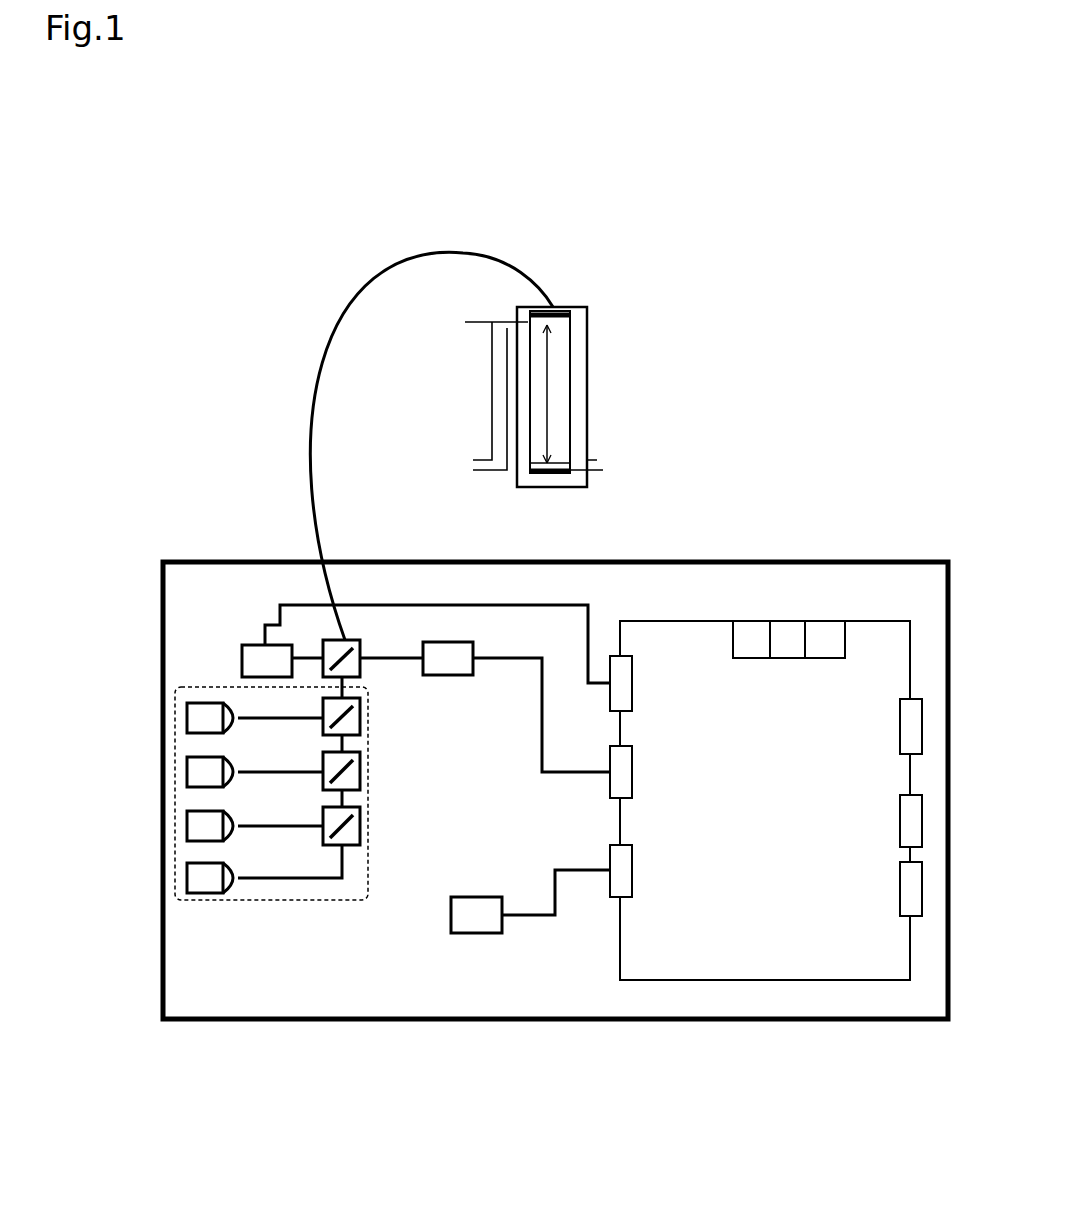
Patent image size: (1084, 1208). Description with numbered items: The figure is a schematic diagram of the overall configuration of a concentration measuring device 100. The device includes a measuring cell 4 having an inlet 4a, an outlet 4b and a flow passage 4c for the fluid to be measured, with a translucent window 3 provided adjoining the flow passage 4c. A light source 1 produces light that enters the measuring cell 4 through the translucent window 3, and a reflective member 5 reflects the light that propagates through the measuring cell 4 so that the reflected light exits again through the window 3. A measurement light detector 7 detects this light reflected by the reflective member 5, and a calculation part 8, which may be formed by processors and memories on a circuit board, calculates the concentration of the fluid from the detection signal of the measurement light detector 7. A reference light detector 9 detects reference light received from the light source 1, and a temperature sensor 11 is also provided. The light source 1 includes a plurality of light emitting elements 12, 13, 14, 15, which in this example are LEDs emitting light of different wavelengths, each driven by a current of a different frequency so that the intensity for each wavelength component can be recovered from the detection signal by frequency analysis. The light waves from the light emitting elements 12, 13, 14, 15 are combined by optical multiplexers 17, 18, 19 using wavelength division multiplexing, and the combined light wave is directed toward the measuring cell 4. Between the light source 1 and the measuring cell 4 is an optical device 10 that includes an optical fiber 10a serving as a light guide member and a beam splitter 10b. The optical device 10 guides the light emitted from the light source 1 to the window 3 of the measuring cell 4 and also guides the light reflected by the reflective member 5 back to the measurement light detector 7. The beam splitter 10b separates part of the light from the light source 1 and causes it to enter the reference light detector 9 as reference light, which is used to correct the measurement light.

The light source 1 is at (273, 902).
The translucent window 3 is at (567, 308).
The measuring cell 4 is at (573, 357).
The inlet 4a is at (522, 393).
The outlet 4b is at (567, 462).
The flow passage 4c is at (560, 397).
The reflective member 5 is at (557, 474).
The measurement light detector 7 is at (256, 643).
The calculation part 8 is at (716, 621).
The reference light detector 9 is at (455, 676).
The optical device 10 is at (323, 387).
The optical fiber 10a is at (394, 336).
The beam splitter 10b is at (341, 658).
The temperature sensor 11 is at (472, 933).
The light emitting element 12 is at (185, 717).
The light emitting element 13 is at (185, 771).
The light emitting element 14 is at (185, 825).
The light emitting element 15 is at (185, 877).
The optical multiplexer 17 is at (363, 718).
The optical multiplexer 18 is at (363, 772).
The optical multiplexer 19 is at (363, 826).
The concentration measuring device 100 is at (797, 360).